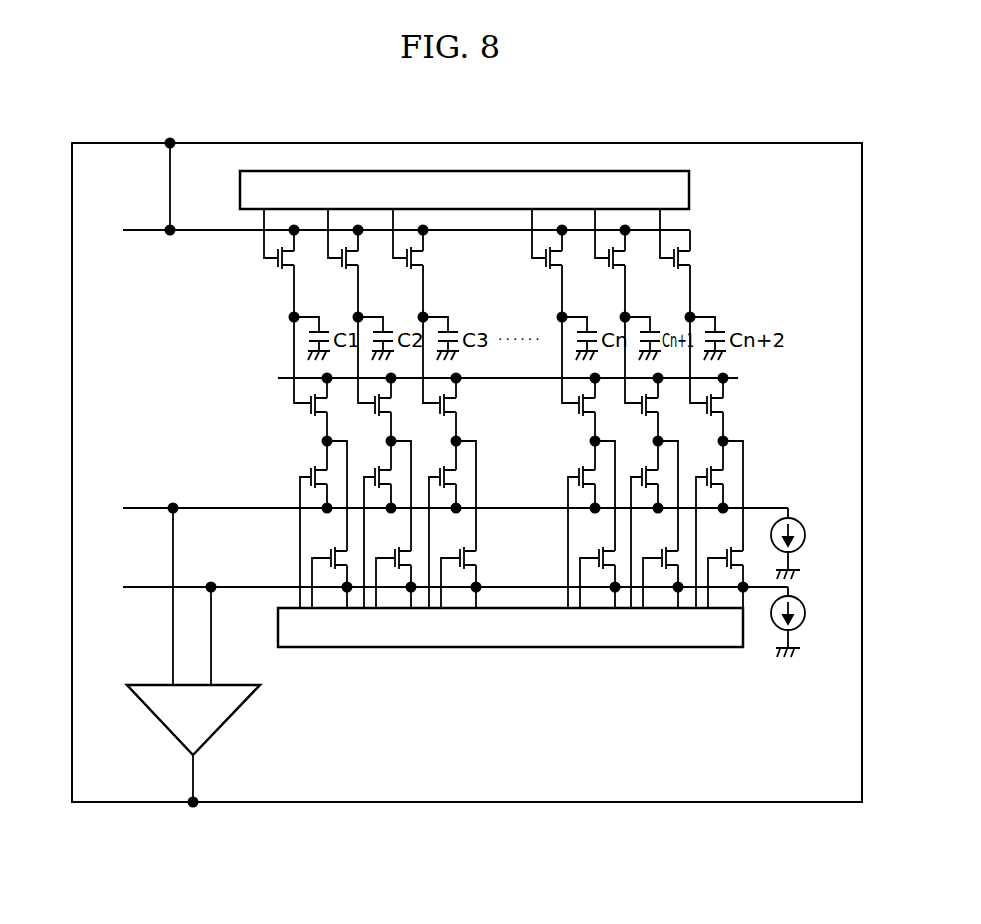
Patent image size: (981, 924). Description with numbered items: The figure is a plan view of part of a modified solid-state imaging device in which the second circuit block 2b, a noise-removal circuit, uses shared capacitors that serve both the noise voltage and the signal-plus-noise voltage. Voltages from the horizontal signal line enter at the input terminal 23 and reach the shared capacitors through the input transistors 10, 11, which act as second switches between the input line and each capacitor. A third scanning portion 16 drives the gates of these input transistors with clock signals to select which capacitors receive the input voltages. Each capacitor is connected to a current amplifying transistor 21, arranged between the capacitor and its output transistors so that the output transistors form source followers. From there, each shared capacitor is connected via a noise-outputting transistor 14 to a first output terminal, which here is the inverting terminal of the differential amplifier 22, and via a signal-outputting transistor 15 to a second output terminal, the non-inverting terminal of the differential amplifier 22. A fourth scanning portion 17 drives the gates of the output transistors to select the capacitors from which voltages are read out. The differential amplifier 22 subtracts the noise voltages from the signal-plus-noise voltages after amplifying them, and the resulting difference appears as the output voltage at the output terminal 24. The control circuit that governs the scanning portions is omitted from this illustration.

The second circuit block 2b is at (800, 143).
The input terminal 23 is at (170, 143).
The third scanning portion 16 is at (690, 190).
The noise-inputting transistor 10 is at (274, 262).
The signal-inputting transistor 11 is at (477, 263).
The current amplifying transistor 21 is at (289, 405).
The signal-outputting transistor 15 is at (298, 471).
The noise-outputting transistor 14 is at (317, 548).
The fourth scanning portion 17 is at (510, 648).
The differential amplifier 22 is at (225, 722).
The output terminal 24 is at (193, 812).